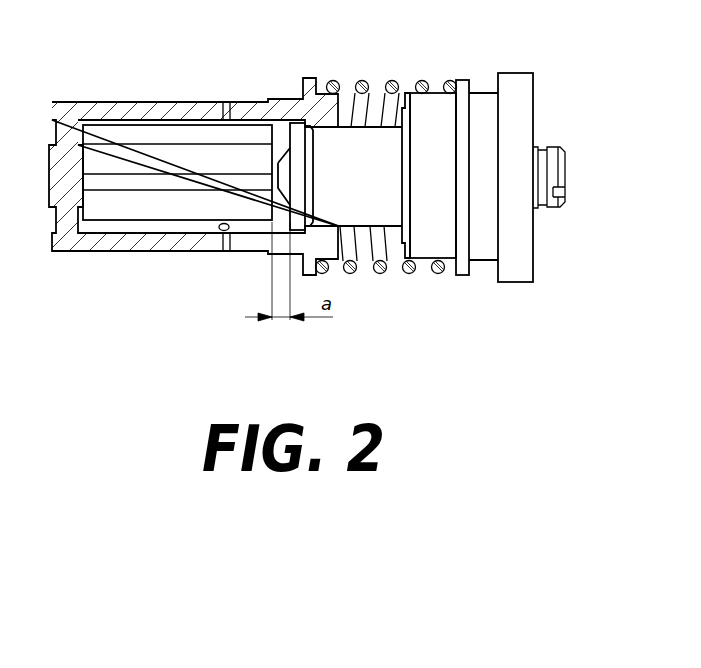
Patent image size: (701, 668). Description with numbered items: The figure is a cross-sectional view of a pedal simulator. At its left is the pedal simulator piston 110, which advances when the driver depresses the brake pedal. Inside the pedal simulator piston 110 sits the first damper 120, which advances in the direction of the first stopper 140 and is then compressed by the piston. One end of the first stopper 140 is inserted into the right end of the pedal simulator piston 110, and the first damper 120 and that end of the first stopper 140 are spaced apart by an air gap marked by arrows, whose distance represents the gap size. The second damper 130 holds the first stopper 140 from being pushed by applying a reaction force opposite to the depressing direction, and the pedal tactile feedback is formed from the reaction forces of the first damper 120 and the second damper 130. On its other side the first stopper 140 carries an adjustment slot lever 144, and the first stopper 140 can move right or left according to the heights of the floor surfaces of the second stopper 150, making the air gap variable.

The pedal simulator piston 110 is at (112, 108).
The first damper 120 is at (180, 115).
The second damper 130 is at (403, 108).
The first stopper 140 is at (423, 260).
The second stopper 150 is at (517, 83).
The adjustment slot lever 144 is at (553, 148).